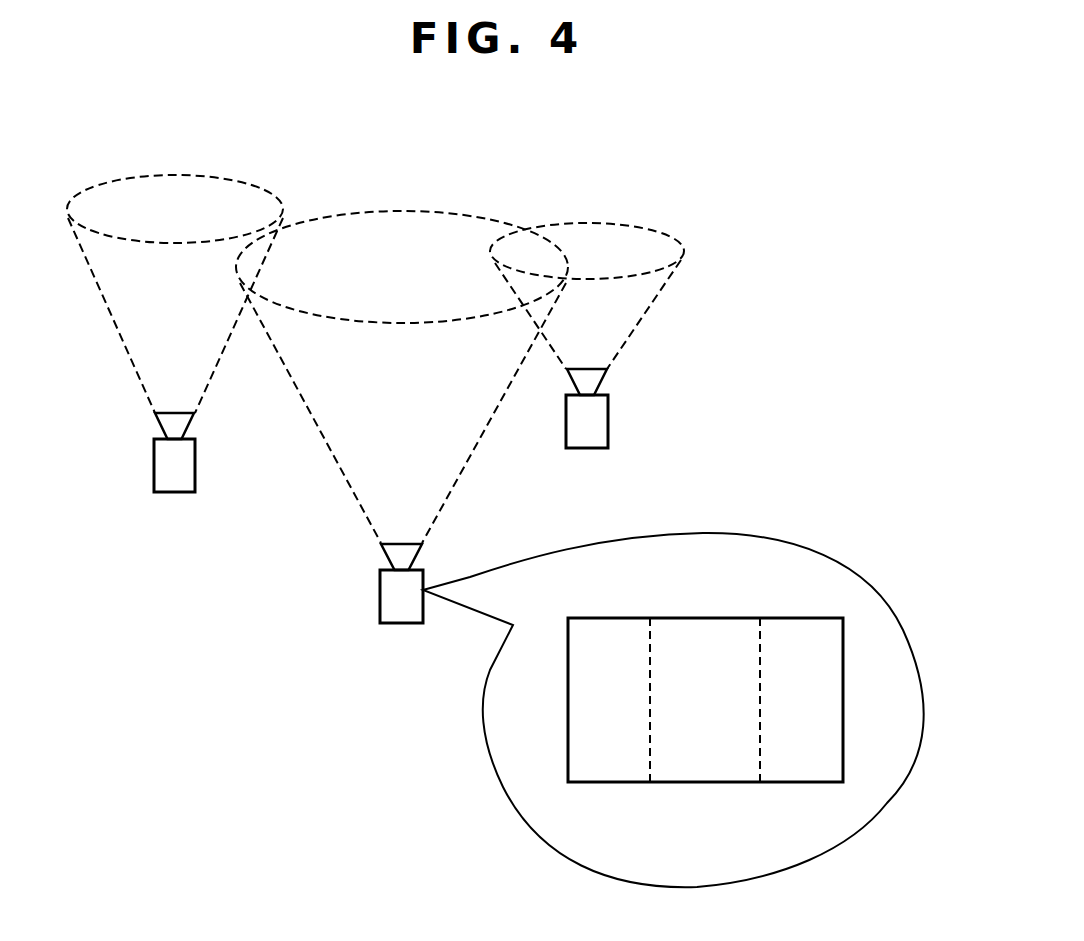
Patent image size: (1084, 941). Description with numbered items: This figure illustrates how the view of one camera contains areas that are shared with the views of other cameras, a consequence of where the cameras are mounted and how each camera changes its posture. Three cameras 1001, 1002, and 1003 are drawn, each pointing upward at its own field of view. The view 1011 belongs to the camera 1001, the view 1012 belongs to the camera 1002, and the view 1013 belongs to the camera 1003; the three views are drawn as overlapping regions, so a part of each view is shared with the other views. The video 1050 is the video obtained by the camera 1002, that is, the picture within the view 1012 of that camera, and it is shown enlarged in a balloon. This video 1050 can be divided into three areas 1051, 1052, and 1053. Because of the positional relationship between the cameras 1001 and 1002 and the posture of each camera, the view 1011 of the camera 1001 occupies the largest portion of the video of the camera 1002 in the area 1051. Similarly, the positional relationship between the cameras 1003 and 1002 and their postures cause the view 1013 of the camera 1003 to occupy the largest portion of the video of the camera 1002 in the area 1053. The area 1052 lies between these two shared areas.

The view of camera 1011 is at (175, 175).
The view of camera 1012 is at (400, 212).
The view of camera 1013 is at (583, 223).
The camera 1001 is at (175, 492).
The camera 1002 is at (402, 623).
The camera 1003 is at (587, 448).
The video 1050 is at (600, 618).
The area 1051 is at (615, 782).
The area 1052 is at (707, 782).
The area 1053 is at (805, 782).